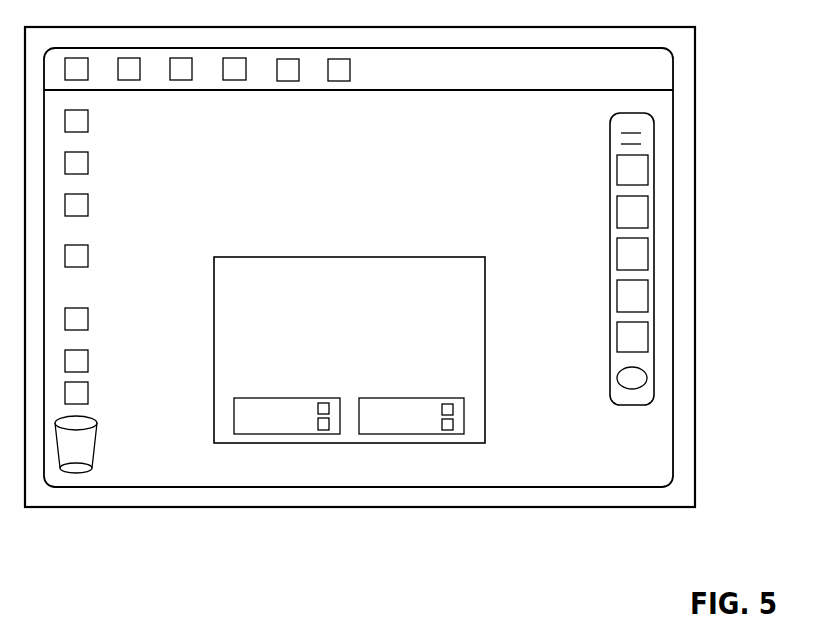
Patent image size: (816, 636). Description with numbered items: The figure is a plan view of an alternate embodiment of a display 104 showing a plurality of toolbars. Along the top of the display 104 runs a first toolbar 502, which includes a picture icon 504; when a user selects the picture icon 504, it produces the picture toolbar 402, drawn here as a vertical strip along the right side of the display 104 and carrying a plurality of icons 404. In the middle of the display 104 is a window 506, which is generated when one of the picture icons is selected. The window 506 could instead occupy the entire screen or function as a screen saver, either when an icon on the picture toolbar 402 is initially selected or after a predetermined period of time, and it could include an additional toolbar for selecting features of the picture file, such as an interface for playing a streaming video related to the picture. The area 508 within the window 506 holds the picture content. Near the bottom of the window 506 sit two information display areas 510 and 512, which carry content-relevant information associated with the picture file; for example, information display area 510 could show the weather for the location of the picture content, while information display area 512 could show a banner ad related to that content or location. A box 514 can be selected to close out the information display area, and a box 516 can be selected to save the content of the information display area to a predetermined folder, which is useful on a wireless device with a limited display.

The display 104 is at (697, 100).
The picture toolbar 402 is at (612, 228).
The icons 404 is at (632, 173).
The first toolbar 502 is at (421, 70).
The picture icon 504 is at (299, 70).
The window 506 is at (487, 343).
The window content area 508 is at (359, 320).
The information display area 510 is at (276, 413).
The information display area 512 is at (465, 426).
The box 514 is at (322, 404).
The box 516 is at (323, 424).